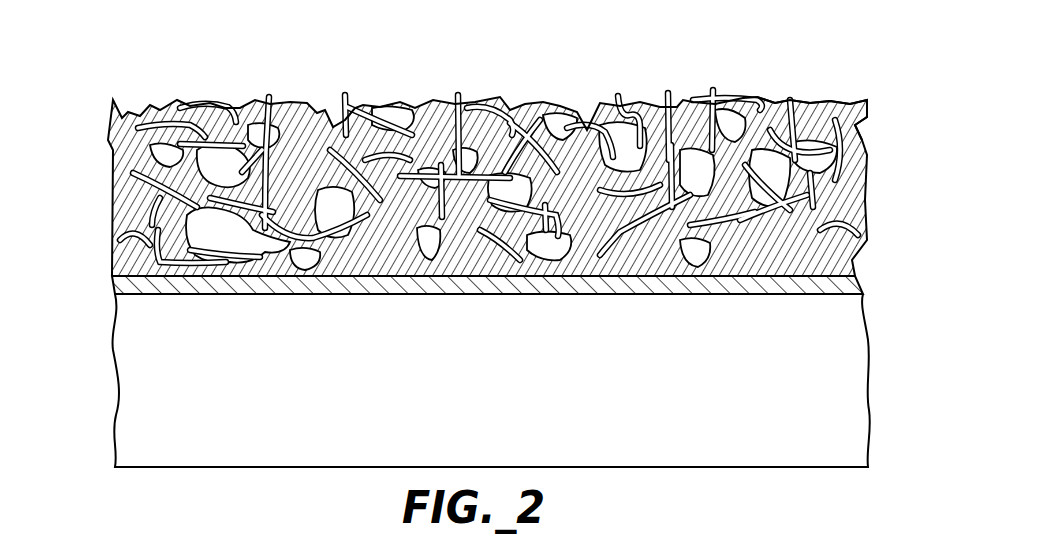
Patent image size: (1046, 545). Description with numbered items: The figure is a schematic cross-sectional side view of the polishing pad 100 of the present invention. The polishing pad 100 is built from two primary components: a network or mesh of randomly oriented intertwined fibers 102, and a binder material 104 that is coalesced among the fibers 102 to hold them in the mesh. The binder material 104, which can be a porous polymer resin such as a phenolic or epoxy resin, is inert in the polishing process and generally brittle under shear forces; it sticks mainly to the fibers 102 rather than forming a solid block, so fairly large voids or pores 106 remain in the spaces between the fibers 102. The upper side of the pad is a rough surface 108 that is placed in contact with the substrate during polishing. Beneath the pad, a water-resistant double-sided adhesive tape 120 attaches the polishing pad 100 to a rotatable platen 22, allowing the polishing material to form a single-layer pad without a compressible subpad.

The polishing pad 100 is at (103, 143).
The fibers 102 is at (346, 104).
The binder material 104 is at (240, 103).
The voids or pores 106 is at (517, 110).
The rough surface 108 is at (768, 102).
The water-resistant double-sided adhesive tape 120 is at (850, 286).
The rotatable platen 22 is at (852, 407).